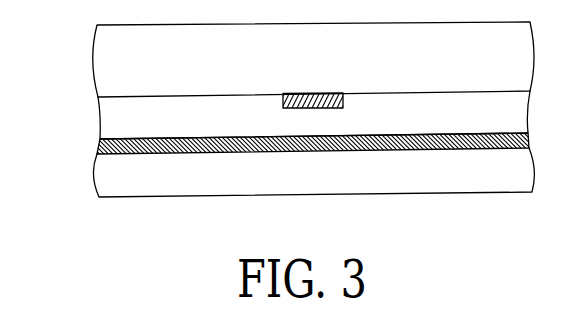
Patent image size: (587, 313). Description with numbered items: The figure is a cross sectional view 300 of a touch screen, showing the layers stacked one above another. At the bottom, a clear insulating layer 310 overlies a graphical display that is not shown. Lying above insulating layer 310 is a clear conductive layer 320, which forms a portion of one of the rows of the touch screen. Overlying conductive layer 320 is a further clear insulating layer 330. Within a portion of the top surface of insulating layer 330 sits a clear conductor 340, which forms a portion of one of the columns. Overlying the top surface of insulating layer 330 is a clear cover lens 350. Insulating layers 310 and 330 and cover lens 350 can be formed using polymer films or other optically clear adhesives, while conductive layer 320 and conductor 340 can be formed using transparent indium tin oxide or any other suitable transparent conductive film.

The cross sectional view 300 is at (145, 280).
The clear insulating layer 310 is at (105, 176).
The clear conductive layer 320 is at (103, 148).
The clear insulating layer 330 is at (110, 120).
The clear conductor 340 is at (311, 93).
The clear cover lens 350 is at (110, 57).